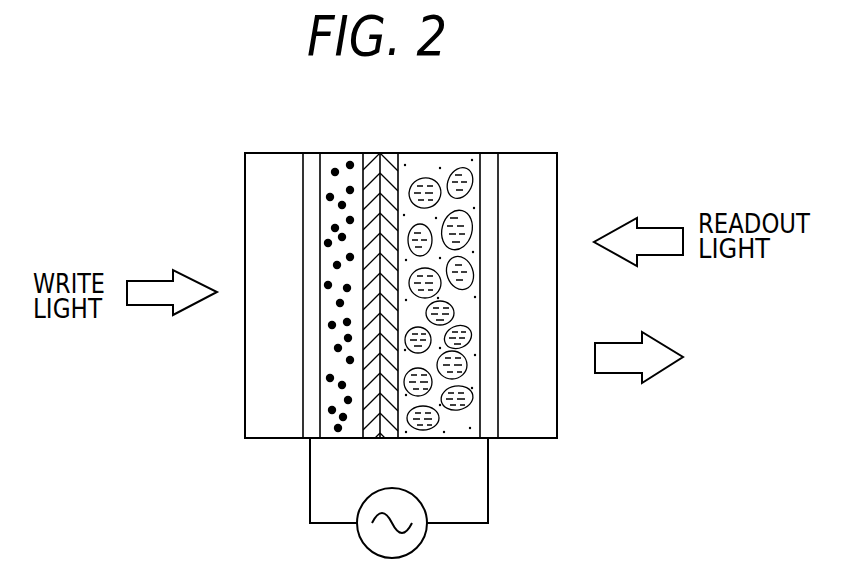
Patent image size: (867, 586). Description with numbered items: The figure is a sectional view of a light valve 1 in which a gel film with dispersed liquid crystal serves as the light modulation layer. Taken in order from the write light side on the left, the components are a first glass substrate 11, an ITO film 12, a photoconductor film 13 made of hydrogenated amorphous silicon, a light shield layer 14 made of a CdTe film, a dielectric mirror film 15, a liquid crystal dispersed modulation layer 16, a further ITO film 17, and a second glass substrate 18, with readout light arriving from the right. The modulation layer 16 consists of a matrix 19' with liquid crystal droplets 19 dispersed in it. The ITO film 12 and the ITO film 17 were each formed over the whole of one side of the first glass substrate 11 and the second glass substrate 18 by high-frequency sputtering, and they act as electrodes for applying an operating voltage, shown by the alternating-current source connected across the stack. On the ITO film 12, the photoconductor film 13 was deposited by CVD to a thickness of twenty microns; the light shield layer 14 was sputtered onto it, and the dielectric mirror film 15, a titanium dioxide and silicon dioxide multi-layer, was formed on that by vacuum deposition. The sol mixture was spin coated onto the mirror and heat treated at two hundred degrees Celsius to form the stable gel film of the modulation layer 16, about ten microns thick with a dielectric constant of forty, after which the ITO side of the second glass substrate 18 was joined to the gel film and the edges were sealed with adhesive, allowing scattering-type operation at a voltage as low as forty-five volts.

The light valve 1 is at (252, 128).
The first glass substrate 11 is at (252, 172).
The ITO film 12 is at (313, 160).
The photoconductor film 13 is at (335, 160).
The light shield layer 14 is at (368, 160).
The dielectric mirror film 15 is at (390, 160).
The liquid crystal dispersed modulation layer 16 is at (501, 291).
The ITO film 17 is at (488, 160).
The second glass substrate 18 is at (553, 186).
The liquid crystal droplets 19 is at (519, 408).
The matrix 19' is at (499, 443).